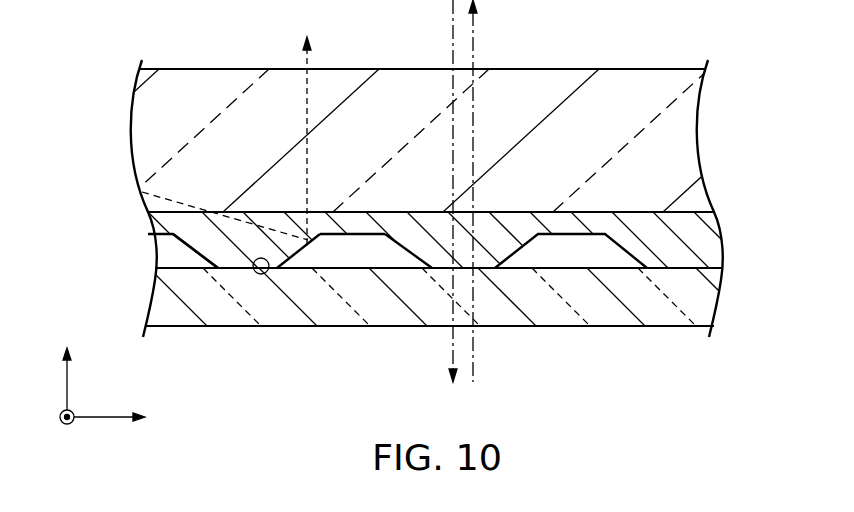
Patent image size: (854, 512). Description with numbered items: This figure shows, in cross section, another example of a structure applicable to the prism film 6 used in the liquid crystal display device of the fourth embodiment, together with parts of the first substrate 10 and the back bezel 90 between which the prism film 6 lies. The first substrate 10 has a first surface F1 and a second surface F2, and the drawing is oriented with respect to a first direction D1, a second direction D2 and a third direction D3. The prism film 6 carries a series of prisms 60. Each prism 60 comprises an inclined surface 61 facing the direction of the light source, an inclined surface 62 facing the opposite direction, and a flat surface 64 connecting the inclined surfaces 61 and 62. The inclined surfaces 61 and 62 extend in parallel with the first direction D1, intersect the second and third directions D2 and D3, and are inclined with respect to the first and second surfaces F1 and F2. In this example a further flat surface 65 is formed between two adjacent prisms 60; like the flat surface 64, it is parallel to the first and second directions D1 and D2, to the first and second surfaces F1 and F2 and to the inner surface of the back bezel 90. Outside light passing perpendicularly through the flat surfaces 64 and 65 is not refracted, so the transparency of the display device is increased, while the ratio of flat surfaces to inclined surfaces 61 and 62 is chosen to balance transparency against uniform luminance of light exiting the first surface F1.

The first substrate 10 is at (682, 128).
The prism film 6 is at (711, 244).
The back bezel 90 is at (712, 305).
The prism 60 is at (237, 269).
The inclined surface 61 is at (306, 258).
The inclined surface 62 is at (188, 262).
The flat surface 64 is at (262, 274).
The flat surface 65 is at (363, 236).
The first surface F1 is at (560, 69).
The second surface F2 is at (602, 212).
The first direction D1 is at (53, 426).
The second direction D2 is at (124, 417).
The third direction D3 is at (67, 365).